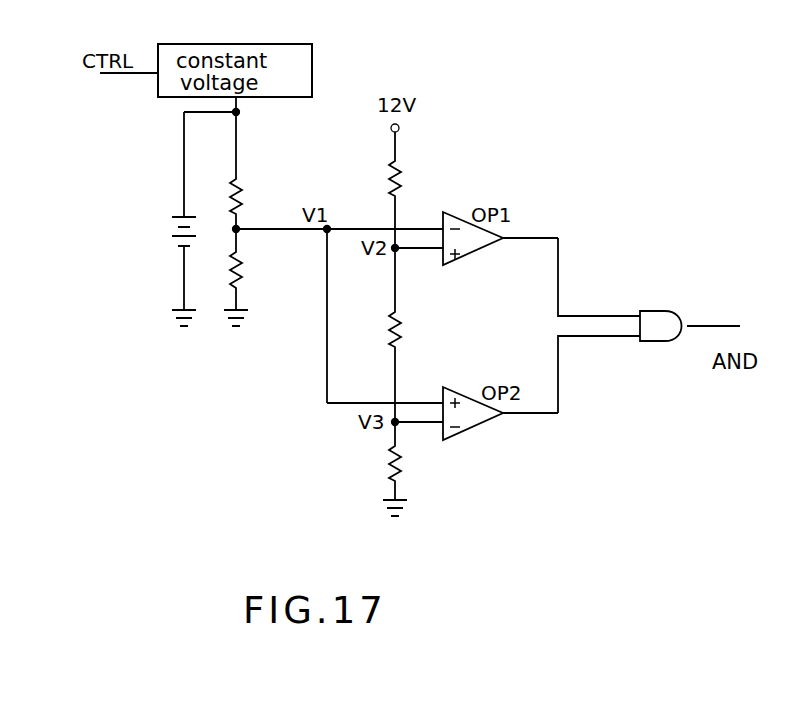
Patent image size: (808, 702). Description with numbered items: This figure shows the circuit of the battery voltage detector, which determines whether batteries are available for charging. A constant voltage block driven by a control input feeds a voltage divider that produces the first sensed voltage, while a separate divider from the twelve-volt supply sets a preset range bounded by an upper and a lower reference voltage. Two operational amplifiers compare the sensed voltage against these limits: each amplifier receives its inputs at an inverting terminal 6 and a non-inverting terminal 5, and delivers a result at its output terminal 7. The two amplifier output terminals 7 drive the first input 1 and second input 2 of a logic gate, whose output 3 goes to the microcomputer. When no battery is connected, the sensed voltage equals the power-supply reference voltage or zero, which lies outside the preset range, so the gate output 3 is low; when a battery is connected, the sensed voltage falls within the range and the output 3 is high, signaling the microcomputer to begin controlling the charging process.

The AND gate first input 1 is at (599, 277).
The AND gate second input 2 is at (599, 374).
The AND gate output 3 is at (713, 313).
The operational amplifier non-inverting input terminal 5 is at (434, 329).
The operational amplifier inverting input terminal 6 is at (434, 331).
The operational amplifier output terminal 7 is at (530, 327).